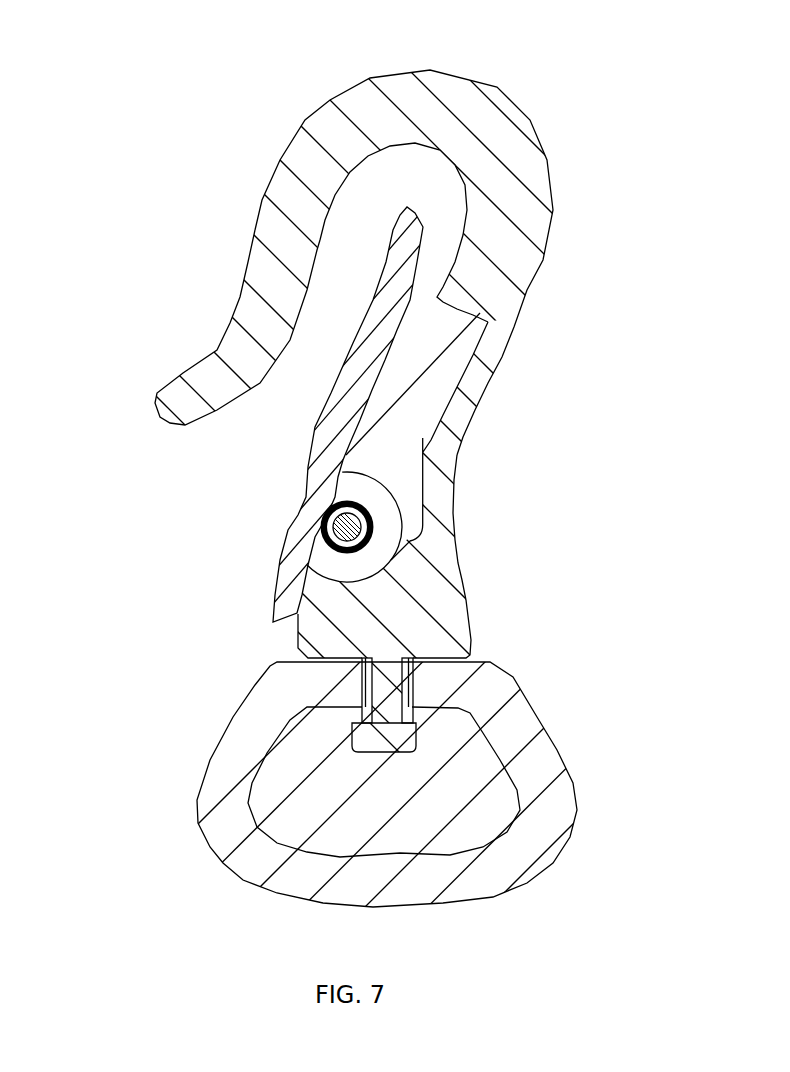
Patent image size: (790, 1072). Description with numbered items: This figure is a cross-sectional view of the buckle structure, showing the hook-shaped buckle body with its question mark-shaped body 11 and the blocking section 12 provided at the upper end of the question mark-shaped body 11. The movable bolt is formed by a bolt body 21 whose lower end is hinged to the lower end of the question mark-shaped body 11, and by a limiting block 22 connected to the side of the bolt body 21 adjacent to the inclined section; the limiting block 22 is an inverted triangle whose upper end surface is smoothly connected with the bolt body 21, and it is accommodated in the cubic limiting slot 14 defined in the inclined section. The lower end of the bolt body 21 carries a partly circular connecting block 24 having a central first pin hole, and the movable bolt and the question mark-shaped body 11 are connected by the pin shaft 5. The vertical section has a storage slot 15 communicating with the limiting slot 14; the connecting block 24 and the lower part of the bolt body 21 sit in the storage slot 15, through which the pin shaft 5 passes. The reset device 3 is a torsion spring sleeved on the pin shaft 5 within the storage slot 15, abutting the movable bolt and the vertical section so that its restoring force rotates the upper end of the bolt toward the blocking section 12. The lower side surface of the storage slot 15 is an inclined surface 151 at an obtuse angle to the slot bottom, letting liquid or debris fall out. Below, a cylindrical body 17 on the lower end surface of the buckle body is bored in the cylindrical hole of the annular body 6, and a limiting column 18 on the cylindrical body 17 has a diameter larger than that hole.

The reset device 3 is at (377, 492).
The pin shaft 5 is at (374, 521).
The annular body 6 is at (549, 777).
The question mark-shaped body 11 is at (521, 237).
The blocking section 12 is at (260, 276).
The limiting slot 14 is at (440, 381).
The storage slot 15 is at (420, 494).
The cylindrical body 17 is at (391, 686).
The limiting column 18 is at (406, 736).
The bolt body 21 is at (290, 528).
The limiting block 22 is at (440, 336).
The connecting block 24 is at (384, 557).
The inclined surface 151 is at (386, 590).